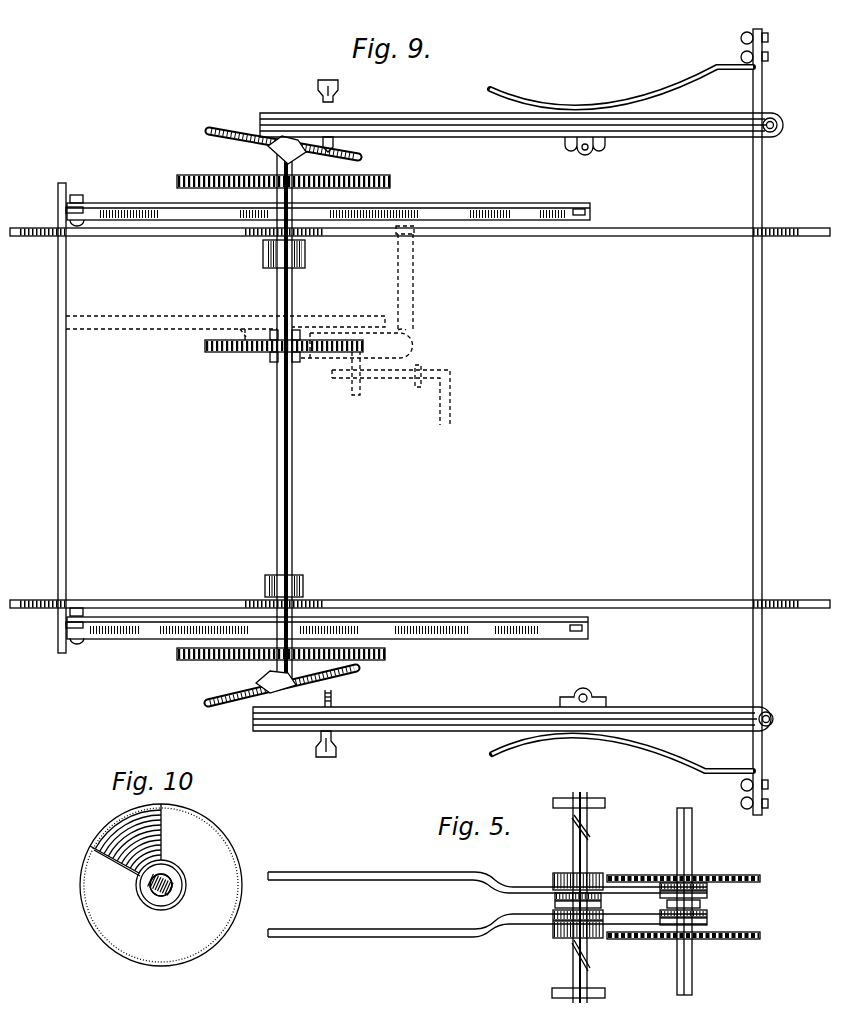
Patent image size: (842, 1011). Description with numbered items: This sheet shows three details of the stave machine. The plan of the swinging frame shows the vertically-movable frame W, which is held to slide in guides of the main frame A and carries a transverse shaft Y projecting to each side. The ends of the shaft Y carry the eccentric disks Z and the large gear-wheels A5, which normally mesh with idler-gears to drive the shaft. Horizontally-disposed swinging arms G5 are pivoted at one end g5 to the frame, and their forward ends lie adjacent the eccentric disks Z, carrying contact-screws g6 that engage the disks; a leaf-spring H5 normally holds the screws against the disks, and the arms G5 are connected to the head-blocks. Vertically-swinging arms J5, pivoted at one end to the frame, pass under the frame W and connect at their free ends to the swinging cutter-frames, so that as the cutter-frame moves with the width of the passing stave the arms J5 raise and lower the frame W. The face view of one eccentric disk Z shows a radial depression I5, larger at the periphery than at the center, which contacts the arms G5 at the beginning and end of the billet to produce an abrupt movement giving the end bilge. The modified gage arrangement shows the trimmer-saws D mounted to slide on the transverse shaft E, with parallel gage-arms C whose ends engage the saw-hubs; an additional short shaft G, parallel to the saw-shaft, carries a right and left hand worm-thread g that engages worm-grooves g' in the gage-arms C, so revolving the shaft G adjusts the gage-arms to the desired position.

In FIG. 9, the main frame A is at (555, 236).
In FIG. 9, the large gear-wheels A5 is at (198, 668).
In FIG. 9, the swinging arms G5 is at (440, 115).
In FIG. 9, the pivot of swinging arm g5 is at (778, 130).
In FIG. 9, the contact-screws g6 is at (302, 750).
In FIG. 9, the leaf-spring H5 is at (630, 750).
In FIG. 9, the vertically-swinging arms J5 is at (82, 642).
In FIG. 10, the radial depression I5 is at (125, 840).
In FIG. 9, the eccentric disks Z is at (225, 136).
In FIG. 10, the eccentric disks Z is at (161, 885).
In FIG. 9, the transverse shaft Y is at (293, 436).
In FIG. 9, the vertically-movable frame W is at (292, 520).
In FIG. 5, the gage-arms C is at (487, 905).
In FIG. 5, the short shaft G is at (588, 972).
In FIG. 5, the worm-thread g is at (566, 894).
In FIG. 5, the worm-grooves g' is at (561, 904).
In FIG. 5, the transverse shaft E is at (694, 963).
In FIG. 5, the trimmer-saws D is at (683, 917).